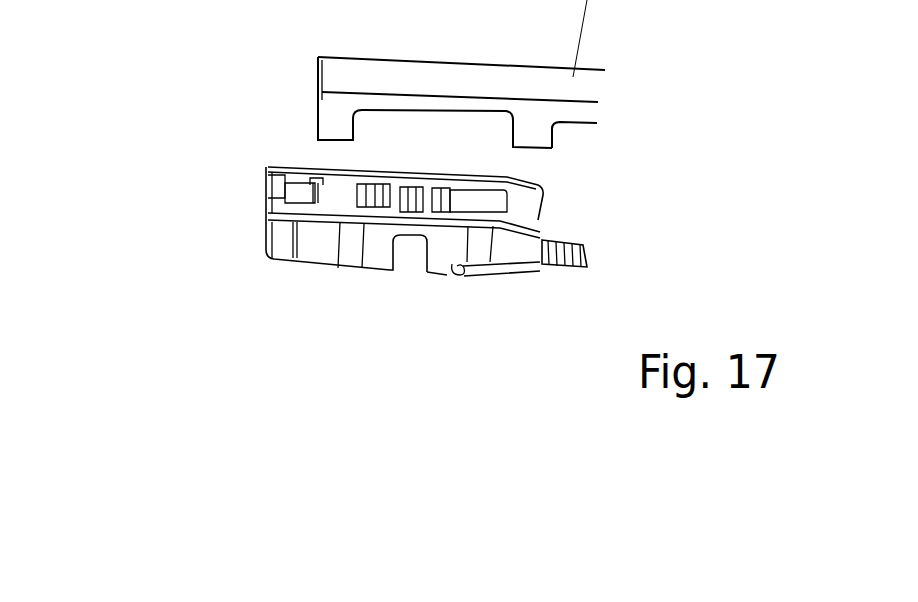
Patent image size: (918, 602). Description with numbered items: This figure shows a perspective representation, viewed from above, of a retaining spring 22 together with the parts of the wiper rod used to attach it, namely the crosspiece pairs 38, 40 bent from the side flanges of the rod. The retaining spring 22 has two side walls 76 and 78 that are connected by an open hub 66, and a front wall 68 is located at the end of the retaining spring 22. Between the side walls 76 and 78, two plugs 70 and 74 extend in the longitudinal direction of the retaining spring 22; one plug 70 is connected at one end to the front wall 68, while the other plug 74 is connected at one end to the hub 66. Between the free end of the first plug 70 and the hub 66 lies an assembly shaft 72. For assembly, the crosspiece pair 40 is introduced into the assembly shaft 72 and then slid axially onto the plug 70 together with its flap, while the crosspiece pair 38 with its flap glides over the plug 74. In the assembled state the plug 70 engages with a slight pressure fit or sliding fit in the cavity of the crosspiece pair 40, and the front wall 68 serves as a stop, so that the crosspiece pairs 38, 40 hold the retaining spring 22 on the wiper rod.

The retaining spring 22 is at (247, 278).
The crosspiece pair 38 is at (533, 140).
The crosspiece pair 40 is at (338, 126).
The open hub 66 is at (405, 243).
The front wall 68 is at (277, 183).
The plug 70 is at (298, 195).
The assembly shaft 72 is at (337, 193).
The plug 74 is at (480, 203).
The side wall 76 is at (410, 170).
The side wall 78 is at (481, 240).